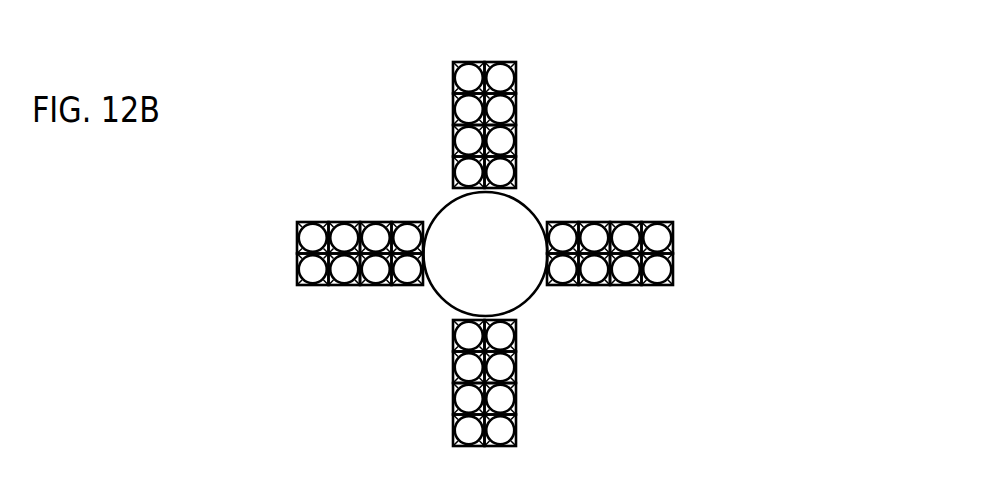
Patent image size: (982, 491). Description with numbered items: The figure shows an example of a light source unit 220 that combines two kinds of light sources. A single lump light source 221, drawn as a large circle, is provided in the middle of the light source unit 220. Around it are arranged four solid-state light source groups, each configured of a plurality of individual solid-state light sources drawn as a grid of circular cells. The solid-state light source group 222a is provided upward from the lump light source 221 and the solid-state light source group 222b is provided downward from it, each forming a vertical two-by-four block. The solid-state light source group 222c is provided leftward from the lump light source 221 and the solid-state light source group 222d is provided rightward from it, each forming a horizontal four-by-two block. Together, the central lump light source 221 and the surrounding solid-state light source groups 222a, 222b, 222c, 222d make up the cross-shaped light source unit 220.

The light source unit 220 is at (753, 95).
The lump light source 221 is at (497, 245).
The solid-state light source group 222a is at (527, 97).
The solid-state light source group 222b is at (522, 388).
The solid-state light source group 222c is at (288, 238).
The solid-state light source group 222d is at (682, 253).